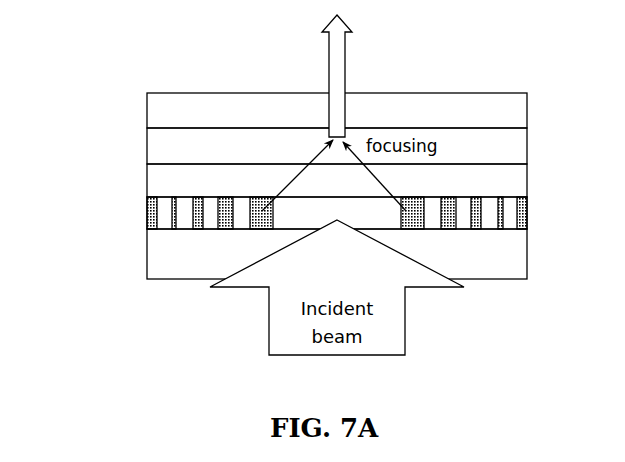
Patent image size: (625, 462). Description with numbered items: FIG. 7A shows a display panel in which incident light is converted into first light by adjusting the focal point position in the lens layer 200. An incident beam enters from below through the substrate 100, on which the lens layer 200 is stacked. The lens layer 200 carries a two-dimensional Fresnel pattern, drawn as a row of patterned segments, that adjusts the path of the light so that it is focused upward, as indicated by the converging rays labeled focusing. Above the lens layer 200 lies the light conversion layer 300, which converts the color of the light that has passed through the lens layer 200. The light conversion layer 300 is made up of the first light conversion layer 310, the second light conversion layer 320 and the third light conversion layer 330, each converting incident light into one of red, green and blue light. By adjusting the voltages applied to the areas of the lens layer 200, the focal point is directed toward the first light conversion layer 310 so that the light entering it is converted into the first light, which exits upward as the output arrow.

The substrate 100 is at (527, 251).
The lens layer 200 is at (527, 212).
The light conversion layer 300 is at (276, 145).
The first light conversion layer 310 is at (147, 182).
The second light conversion layer 320 is at (147, 147).
The third light conversion layer 330 is at (306, 110).